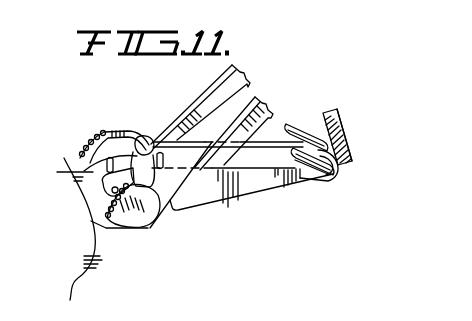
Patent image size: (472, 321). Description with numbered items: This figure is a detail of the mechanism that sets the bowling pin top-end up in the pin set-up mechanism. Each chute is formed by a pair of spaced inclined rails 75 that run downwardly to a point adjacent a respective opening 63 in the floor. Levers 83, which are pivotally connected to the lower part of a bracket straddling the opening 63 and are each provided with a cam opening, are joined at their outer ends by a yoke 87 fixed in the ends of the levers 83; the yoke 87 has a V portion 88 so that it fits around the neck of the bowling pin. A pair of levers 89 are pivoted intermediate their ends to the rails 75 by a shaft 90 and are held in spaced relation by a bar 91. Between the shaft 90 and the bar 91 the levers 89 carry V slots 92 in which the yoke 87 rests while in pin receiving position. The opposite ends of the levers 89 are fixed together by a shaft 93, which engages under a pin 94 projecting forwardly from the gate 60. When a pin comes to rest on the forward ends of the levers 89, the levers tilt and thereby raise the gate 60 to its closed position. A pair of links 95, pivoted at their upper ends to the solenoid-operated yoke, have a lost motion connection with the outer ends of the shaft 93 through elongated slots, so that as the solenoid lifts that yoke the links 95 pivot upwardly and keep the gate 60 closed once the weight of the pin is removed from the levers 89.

The gate 60 is at (340, 113).
The opening 63 is at (92, 254).
The inclined rails 75 is at (259, 120).
The levers 83 is at (117, 126).
The yoke 87 is at (137, 134).
The V portion 88 is at (149, 137).
The levers 89 is at (272, 140).
The shaft 90 is at (208, 91).
The bar 91 is at (92, 195).
The V slots 92 is at (57, 172).
The shaft 93 is at (345, 165).
The pin 94 is at (356, 147).
The links 95 is at (312, 118).